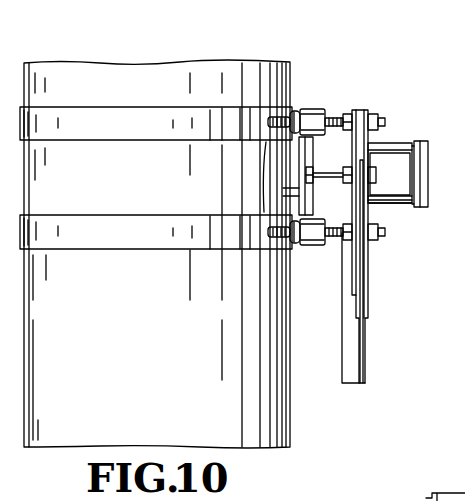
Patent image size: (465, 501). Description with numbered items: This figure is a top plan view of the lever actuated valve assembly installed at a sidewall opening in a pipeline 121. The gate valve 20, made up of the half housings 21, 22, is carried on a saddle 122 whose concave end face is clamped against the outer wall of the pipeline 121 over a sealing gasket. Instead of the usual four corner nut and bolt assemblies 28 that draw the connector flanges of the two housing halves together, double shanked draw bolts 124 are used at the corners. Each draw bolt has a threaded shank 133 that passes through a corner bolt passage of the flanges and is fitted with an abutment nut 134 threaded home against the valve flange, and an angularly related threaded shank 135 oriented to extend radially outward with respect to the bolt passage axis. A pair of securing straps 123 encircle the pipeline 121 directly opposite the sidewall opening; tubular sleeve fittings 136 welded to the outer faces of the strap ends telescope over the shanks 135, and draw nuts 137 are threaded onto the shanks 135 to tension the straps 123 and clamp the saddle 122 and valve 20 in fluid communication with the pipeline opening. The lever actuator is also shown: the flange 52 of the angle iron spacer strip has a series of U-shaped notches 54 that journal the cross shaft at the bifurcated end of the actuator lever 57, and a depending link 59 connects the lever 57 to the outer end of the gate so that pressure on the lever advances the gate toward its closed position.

The gate valve 20 is at (405, 136).
The half housing 21 is at (335, 191).
The half housing 22 is at (404, 161).
The nut and bolt assembly 28 is at (308, 167).
The flange 52 is at (358, 348).
The U-shaped notch 54 is at (350, 358).
The actuator lever 57 is at (377, 212).
The depending link 59 is at (370, 274).
The pipeline 121 is at (97, 359).
The saddle 122 is at (274, 167).
The securing strap 123 is at (62, 218).
The double shanked draw bolt 124 is at (336, 128).
The threaded shank 133 is at (383, 120).
The abutment nut 134 is at (345, 113).
The threaded shank 135 is at (289, 116).
The tubular sleeve fitting 136 is at (312, 108).
The draw nut 137 is at (299, 110).